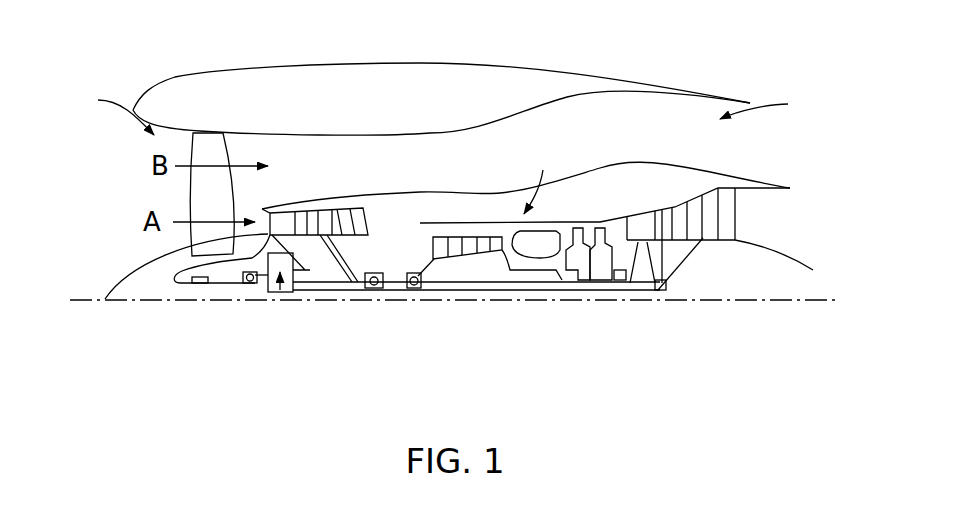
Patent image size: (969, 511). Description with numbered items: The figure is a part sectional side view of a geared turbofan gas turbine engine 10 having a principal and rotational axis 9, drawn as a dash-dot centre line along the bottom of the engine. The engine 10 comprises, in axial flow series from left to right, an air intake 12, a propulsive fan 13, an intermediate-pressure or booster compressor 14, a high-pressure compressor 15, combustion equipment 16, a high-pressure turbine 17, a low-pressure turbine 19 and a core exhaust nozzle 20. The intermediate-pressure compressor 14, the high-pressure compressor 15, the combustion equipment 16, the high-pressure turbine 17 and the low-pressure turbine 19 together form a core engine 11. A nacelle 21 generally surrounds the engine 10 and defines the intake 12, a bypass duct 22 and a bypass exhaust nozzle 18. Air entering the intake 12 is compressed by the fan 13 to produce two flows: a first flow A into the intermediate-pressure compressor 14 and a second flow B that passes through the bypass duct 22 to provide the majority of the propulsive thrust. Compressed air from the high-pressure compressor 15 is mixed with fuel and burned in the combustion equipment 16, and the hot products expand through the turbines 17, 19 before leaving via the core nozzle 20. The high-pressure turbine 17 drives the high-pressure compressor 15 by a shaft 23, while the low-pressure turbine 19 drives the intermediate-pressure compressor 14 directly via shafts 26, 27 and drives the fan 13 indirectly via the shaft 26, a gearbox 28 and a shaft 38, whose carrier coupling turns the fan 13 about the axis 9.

The principal and rotational axis 9 is at (707, 300).
The geared turbofan gas turbine engine 10 is at (170, 79).
The core engine 11 is at (604, 207).
The air intake 12 is at (106, 112).
The propulsive fan 13 is at (203, 196).
The intermediate-pressure compressor 14 is at (340, 214).
The high-pressure compressor 15 is at (473, 245).
The combustion equipment 16 is at (543, 247).
The high-pressure turbine 17 is at (595, 232).
The bypass exhaust nozzle 18 is at (770, 105).
The low-pressure turbine 19 is at (710, 208).
The core exhaust nozzle 20 is at (777, 218).
The nacelle 21 is at (417, 77).
The bypass duct 22 is at (606, 140).
The shaft 23 is at (549, 272).
The shaft 26 is at (465, 291).
The shaft 27 is at (334, 258).
The gearbox 28 is at (280, 294).
The shaft 38 is at (213, 285).